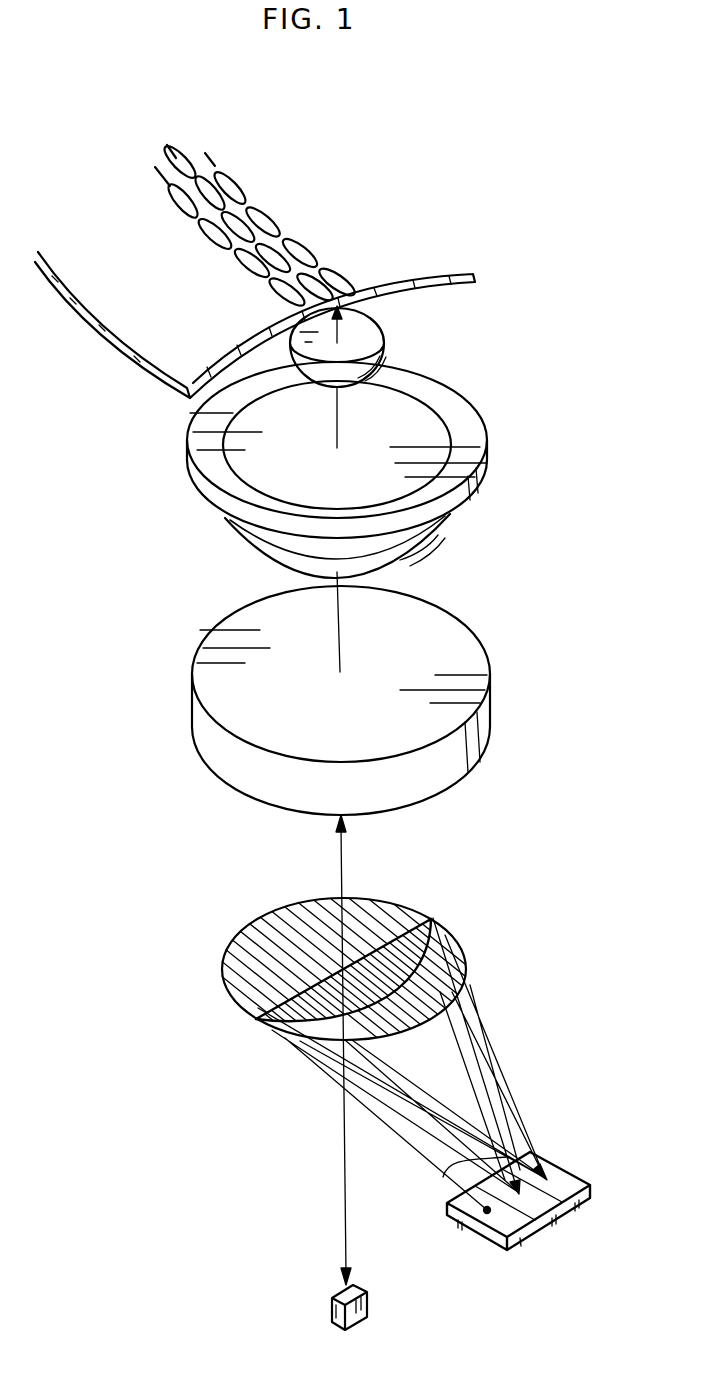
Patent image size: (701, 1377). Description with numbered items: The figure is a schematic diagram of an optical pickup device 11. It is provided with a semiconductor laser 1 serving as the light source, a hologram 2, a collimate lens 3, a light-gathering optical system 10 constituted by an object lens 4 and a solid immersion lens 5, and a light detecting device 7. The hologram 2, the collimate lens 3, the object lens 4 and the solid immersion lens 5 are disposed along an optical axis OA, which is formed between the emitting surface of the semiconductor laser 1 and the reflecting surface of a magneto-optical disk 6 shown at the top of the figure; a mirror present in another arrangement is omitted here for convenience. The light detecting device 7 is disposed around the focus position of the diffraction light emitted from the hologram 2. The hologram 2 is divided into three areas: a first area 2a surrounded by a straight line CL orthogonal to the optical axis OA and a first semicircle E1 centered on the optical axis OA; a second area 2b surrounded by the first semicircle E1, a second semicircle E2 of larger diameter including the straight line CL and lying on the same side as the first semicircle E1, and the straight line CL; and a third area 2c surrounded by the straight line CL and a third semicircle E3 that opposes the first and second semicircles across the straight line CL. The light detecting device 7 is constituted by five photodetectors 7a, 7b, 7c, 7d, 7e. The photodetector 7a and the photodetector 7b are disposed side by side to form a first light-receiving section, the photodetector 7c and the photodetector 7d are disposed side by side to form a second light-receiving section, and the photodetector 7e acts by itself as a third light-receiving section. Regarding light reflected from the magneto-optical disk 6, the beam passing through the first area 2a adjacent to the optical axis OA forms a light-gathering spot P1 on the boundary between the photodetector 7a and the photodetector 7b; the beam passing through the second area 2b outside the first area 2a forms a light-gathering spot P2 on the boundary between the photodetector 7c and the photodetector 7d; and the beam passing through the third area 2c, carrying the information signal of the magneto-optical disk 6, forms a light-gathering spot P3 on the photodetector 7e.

The semiconductor laser 1 is at (330, 1312).
The hologram 2 is at (338, 975).
The first area 2a is at (466, 969).
The second area 2b is at (463, 988).
The third area 2c is at (237, 948).
The collimate lens 3 is at (483, 727).
The object lens 4 is at (481, 478).
The solid immersion lens 5 is at (377, 330).
The magneto-optical disk 6 is at (470, 273).
The light detecting device 7 is at (532, 1183).
The first photodetector 7a is at (580, 1208).
The second photodetector 7b is at (540, 1158).
The third photodetector 7c is at (547, 1203).
The fourth photodetector 7d is at (456, 1207).
The photodetector 7e is at (513, 1222).
The light-gathering optical system 10 is at (545, 322).
The optical pickup device 11 is at (166, 859).
The optical axis OA is at (343, 860).
The straight line CL is at (258, 1013).
The first semicircle E1 is at (459, 944).
The second semicircle E2 is at (280, 1042).
The third semicircle E3 is at (383, 901).
The light-gathering spot P1 is at (552, 1165).
The light-gathering spot P2 is at (530, 1157).
The light-gathering spot P3 is at (478, 1240).